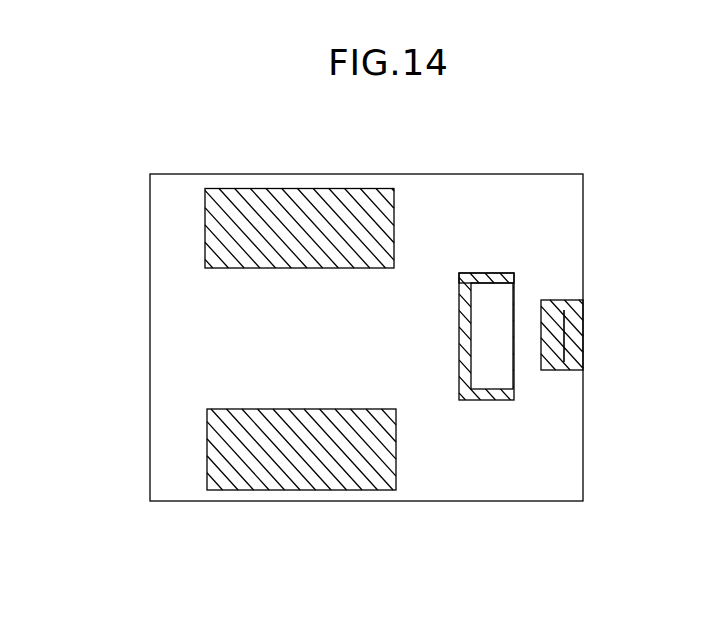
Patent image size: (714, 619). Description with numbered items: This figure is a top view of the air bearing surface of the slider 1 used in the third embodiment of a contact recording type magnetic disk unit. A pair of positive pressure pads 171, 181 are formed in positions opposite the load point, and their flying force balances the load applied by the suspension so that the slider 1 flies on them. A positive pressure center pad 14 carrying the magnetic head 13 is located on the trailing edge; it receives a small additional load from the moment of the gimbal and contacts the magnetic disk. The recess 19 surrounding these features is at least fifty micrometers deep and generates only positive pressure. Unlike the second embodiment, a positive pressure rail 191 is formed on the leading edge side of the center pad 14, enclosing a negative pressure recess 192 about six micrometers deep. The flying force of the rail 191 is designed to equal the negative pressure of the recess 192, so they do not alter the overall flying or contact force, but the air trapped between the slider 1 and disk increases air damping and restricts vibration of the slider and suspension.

The slider 1 is at (140, 214).
The magnetic head 13 is at (566, 350).
The positive pressure center pad 14 is at (572, 316).
The recess 19 is at (362, 347).
The positive pressure pad 171 is at (325, 202).
The positive pressure pad 181 is at (331, 477).
The positive pressure rail 191 is at (462, 302).
The negative pressure recess 192 is at (490, 292).